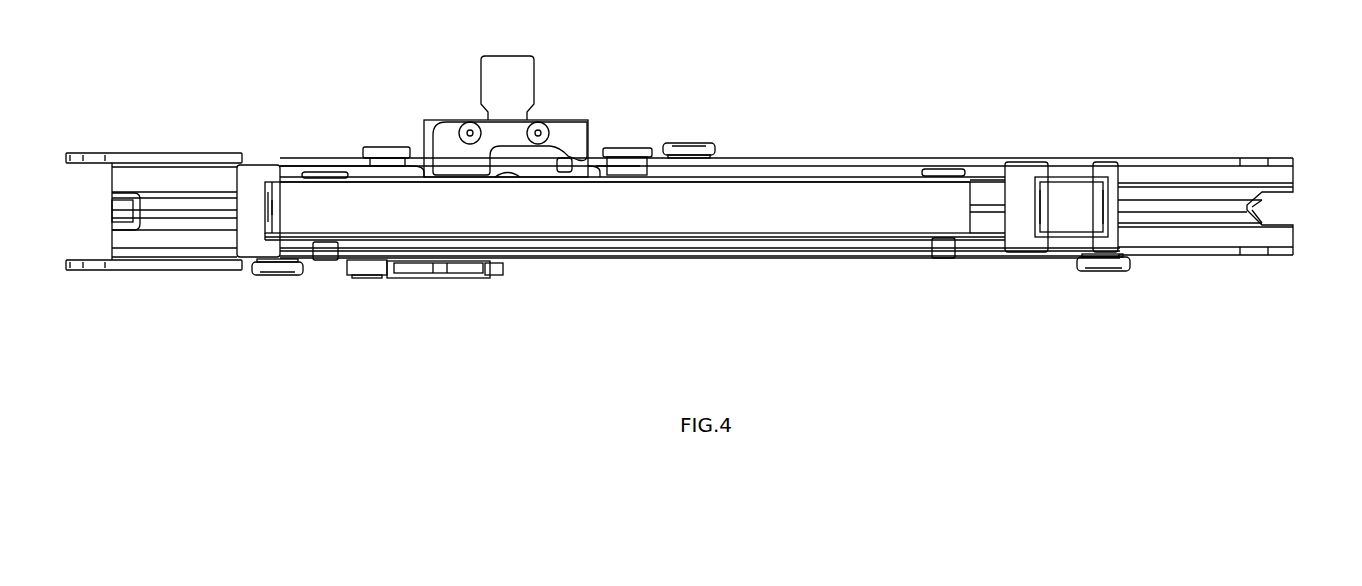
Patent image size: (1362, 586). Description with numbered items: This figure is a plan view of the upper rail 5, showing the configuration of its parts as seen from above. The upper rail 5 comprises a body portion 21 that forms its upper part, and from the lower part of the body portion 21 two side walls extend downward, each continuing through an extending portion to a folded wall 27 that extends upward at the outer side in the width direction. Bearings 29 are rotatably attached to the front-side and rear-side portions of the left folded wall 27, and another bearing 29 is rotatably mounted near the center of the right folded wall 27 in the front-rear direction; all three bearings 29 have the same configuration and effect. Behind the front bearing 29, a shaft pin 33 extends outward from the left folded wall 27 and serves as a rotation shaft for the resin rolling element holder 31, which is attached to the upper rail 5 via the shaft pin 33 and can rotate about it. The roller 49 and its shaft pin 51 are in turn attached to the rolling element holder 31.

The upper rail 5 is at (1317, 126).
The body portion 21 is at (773, 198).
The folded wall 27 is at (537, 259).
The bearing 29 is at (690, 142).
The rolling element holder 31 is at (495, 277).
The shaft pin 33 is at (385, 279).
The roller 49 is at (440, 273).
The shaft pin 51 is at (452, 279).